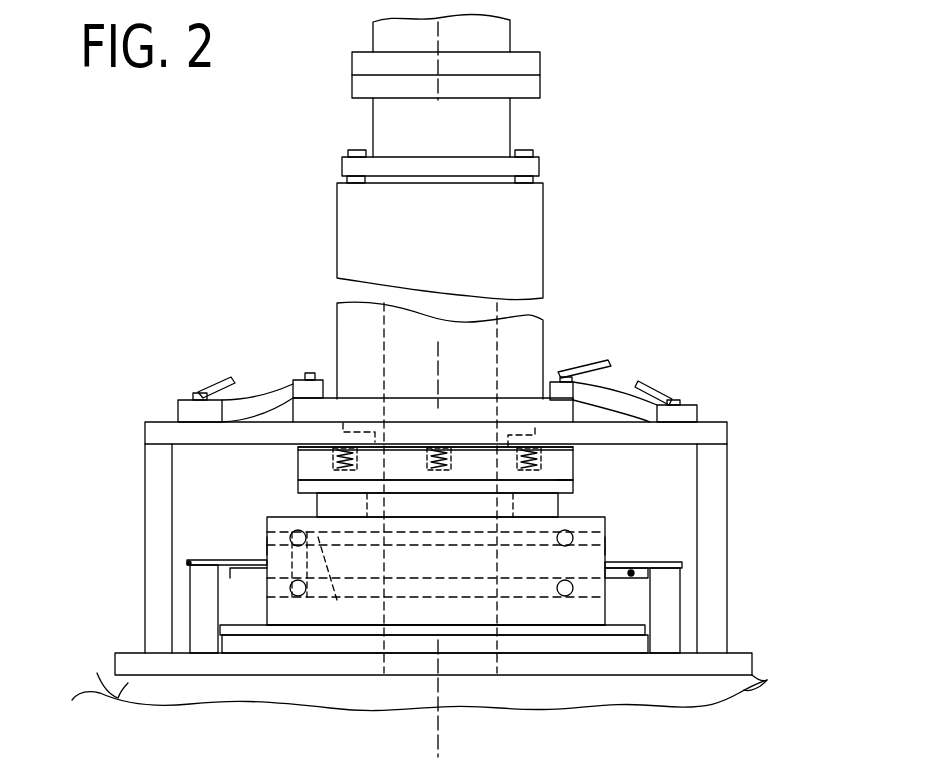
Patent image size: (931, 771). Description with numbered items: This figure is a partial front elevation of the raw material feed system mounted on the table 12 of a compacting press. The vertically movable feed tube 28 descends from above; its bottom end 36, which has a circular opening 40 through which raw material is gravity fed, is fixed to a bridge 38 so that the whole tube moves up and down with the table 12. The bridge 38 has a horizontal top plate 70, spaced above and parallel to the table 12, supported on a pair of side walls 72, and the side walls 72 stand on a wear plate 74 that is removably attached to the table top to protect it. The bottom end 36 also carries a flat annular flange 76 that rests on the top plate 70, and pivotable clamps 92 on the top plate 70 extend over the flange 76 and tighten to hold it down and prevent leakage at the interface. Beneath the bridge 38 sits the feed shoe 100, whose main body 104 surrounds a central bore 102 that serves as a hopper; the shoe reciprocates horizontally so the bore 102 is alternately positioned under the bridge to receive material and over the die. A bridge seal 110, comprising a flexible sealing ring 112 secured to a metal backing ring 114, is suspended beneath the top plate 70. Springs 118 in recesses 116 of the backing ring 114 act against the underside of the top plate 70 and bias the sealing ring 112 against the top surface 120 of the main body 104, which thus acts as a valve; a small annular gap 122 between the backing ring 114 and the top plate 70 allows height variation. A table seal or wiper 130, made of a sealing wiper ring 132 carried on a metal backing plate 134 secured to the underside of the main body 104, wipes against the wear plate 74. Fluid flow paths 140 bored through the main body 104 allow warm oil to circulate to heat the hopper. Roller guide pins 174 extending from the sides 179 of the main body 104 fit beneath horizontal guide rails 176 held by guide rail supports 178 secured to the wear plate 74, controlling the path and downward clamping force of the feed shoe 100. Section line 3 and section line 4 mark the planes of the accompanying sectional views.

The section line 3- 3 is at (398, 363).
The section line 4- 4 is at (398, 33).
The table 12 is at (417, 700).
The vertically movable feed tube 28 is at (338, 308).
The bottom end 36 is at (360, 399).
The bridge 38 is at (157, 422).
The circular opening 40 is at (480, 399).
The horizontal top plate 70 is at (157, 432).
The side walls 72 is at (153, 515).
The wear plate 74 is at (240, 660).
The flat annular flange 76 is at (308, 408).
The clamps 92 is at (250, 393).
The feed shoe 100 is at (617, 517).
The central bore 102 is at (480, 610).
The main body 104 is at (630, 606).
The bridge seal 110 is at (290, 475).
The flexible sealing ring 112 is at (299, 484).
The metal backing ring 114 is at (563, 472).
The recesses 116 is at (333, 461).
The springs 118 is at (577, 468).
The top surface 120 is at (313, 502).
The annular gap 122 is at (580, 448).
The table seal 130 is at (668, 628).
The sealing wiper ring 132 is at (630, 645).
The metal backing plate 134 is at (227, 628).
The fluid flow paths 140 is at (345, 581).
The roller guide pins 174 is at (253, 572).
The horizontal guide rails 176 is at (188, 563).
The guide rail supports 178 is at (198, 603).
The sides 179 is at (267, 537).